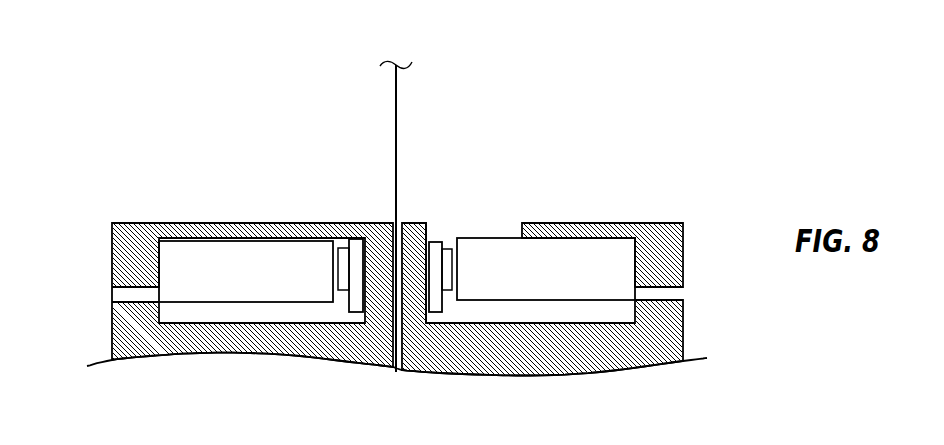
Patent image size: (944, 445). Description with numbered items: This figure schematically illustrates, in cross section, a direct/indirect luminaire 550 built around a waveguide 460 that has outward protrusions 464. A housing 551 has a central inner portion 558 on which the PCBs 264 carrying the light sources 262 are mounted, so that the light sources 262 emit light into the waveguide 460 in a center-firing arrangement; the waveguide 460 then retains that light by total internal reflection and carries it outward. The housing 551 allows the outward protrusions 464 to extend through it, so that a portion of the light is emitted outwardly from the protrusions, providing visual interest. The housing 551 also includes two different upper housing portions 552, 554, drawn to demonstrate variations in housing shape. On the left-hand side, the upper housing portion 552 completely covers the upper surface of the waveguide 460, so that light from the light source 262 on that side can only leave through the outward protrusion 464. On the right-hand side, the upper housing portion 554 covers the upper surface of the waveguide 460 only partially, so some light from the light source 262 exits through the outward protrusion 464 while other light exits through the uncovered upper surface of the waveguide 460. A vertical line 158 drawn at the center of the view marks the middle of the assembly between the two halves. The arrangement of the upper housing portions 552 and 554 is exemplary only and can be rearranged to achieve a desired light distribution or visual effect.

The centerline / wall 158 is at (396, 108).
The direct/indirect luminaire 550 is at (433, 208).
The housing 551 is at (118, 327).
The upper housing portion 552 is at (189, 214).
The upper housing portion 554 is at (605, 214).
The inner portion 558 is at (412, 252).
The waveguide 460 is at (255, 245).
The light source 262 is at (344, 248).
The PCB 264 is at (356, 250).
The outward protrusion 464 is at (121, 281).